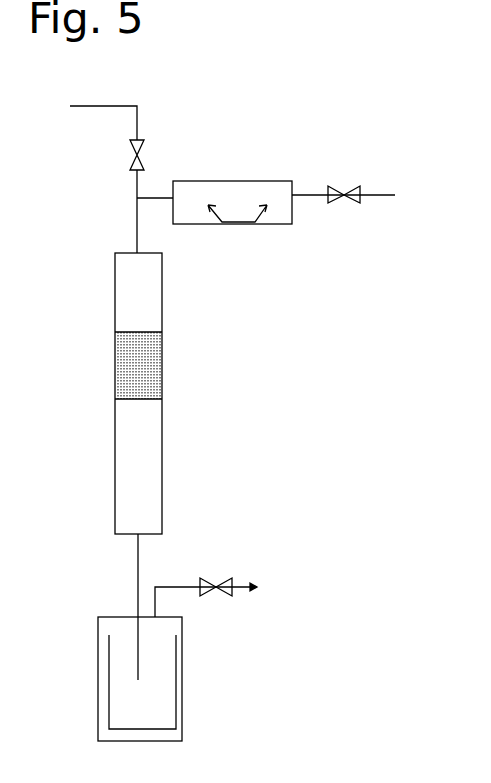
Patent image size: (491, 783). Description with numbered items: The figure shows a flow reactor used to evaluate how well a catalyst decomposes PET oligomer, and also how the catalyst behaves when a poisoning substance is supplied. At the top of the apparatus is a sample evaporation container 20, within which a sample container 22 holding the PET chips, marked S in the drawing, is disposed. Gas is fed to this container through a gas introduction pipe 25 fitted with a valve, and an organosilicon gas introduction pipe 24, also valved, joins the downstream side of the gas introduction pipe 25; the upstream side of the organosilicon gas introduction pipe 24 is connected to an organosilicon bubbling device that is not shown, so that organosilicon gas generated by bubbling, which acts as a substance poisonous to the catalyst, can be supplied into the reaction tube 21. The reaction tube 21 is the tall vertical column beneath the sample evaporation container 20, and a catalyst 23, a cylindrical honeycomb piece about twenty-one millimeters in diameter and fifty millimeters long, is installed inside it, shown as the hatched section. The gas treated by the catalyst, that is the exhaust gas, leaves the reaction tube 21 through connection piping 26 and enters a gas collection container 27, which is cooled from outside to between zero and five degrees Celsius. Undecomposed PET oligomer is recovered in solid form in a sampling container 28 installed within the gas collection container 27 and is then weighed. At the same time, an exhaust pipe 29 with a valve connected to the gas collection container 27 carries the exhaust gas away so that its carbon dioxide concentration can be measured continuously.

The sample evaporation container 20 is at (212, 181).
The reaction tube 21 is at (162, 302).
The sample container 22 is at (257, 220).
The catalyst 23 is at (147, 373).
The organosilicon gas introduction pipe 24 is at (102, 106).
The gas introduction pipe 25 is at (318, 195).
The connection piping 26 is at (135, 583).
The gas collection container 27 is at (182, 657).
The sampling container 28 is at (177, 712).
The exhaust pipe 29 is at (180, 587).